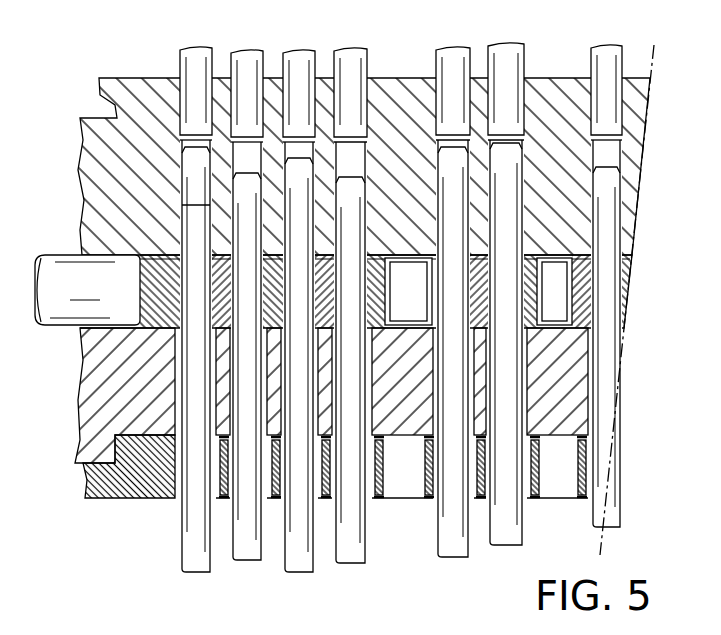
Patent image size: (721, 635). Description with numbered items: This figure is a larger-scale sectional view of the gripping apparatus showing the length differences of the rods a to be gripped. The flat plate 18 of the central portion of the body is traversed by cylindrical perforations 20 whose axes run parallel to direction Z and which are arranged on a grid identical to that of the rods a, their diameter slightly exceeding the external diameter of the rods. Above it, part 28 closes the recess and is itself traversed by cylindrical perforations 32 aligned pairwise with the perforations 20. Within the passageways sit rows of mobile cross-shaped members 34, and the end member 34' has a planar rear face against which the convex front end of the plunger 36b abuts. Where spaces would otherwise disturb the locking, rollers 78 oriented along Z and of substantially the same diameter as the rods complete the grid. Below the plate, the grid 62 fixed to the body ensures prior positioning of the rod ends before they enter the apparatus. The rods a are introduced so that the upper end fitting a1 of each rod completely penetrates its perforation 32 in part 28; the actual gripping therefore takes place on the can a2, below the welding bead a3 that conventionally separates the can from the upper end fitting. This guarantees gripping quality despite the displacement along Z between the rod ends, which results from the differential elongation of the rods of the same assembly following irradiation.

The part 28 is at (398, 100).
The cylindrical perforations 32 is at (518, 158).
The mobile cross-shaped member 34 is at (552, 256).
The mobile member 34' is at (125, 381).
The plunger 36b is at (58, 330).
The roller 78 is at (556, 296).
The cylindrical perforations 20 is at (637, 437).
The flat plate 18 is at (397, 410).
The grid 62 is at (98, 503).
The upper end fitting a1 is at (192, 160).
The can a2 is at (247, 510).
The welding bead a3 is at (200, 207).
The rods a is at (283, 576).